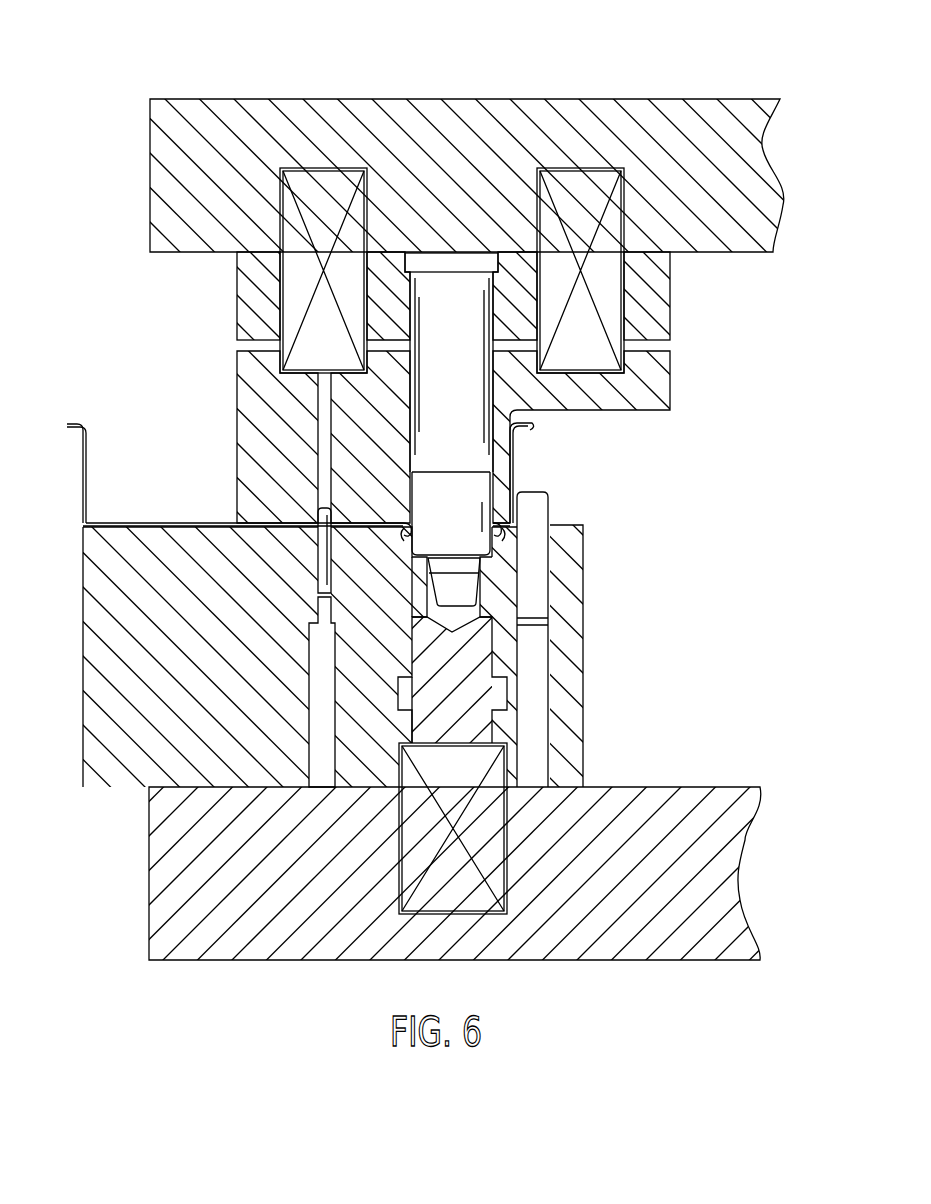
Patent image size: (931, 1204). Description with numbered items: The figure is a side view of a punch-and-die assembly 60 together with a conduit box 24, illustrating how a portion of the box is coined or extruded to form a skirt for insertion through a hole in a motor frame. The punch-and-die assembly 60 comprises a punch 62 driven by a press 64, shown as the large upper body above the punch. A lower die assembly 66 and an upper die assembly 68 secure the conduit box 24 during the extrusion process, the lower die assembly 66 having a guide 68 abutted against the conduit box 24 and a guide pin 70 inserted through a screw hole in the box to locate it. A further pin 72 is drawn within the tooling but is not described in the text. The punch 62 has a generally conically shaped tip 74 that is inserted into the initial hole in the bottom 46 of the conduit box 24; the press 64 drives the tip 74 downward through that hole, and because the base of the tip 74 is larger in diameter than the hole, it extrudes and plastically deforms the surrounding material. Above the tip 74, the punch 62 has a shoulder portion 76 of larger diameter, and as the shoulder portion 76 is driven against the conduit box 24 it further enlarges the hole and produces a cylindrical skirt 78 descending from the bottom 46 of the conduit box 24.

The punch-and-die assembly 60 is at (499, 48).
The press 64 is at (772, 177).
The upper die assembly 68 is at (672, 367).
The punch 62 is at (467, 370).
The conduit box 24 is at (80, 480).
The bottom 46 is at (140, 522).
The cylindrical skirt 78 is at (490, 540).
The shoulder portion 76 is at (490, 538).
The lower die assembly 66 is at (587, 607).
The tip 74 is at (458, 586).
The stripper pin 72 is at (318, 516).
The guide pin 70 is at (542, 497).